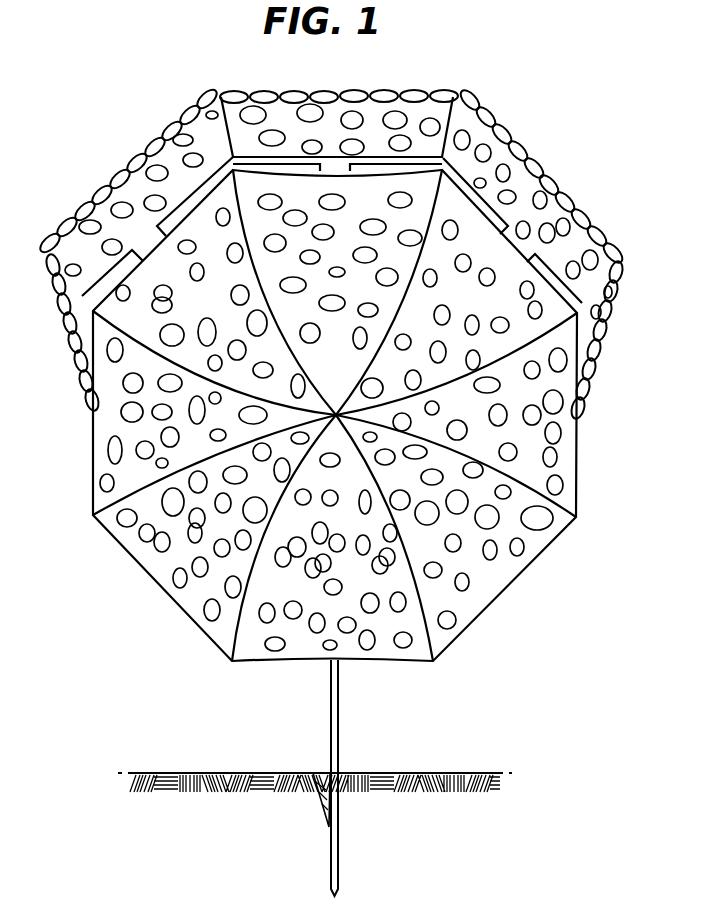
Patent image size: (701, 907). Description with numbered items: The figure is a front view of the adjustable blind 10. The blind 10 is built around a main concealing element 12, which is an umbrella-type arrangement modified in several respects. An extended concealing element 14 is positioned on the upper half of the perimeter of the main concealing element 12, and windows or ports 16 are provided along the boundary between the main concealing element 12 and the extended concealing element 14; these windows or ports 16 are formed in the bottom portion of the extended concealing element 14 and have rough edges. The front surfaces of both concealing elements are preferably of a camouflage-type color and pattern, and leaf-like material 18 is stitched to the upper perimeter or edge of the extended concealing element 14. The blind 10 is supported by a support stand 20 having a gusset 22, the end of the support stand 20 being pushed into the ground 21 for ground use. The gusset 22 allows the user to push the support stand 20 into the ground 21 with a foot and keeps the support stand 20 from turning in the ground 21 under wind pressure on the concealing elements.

The blind 10 is at (571, 112).
The main concealing element 12 is at (343, 389).
The extended concealing element 14 is at (413, 118).
The windows or ports 16 is at (225, 160).
The leaf-like material 18 is at (612, 328).
The support stand 20 is at (339, 724).
The ground 21 is at (427, 772).
The gusset 22 is at (315, 797).